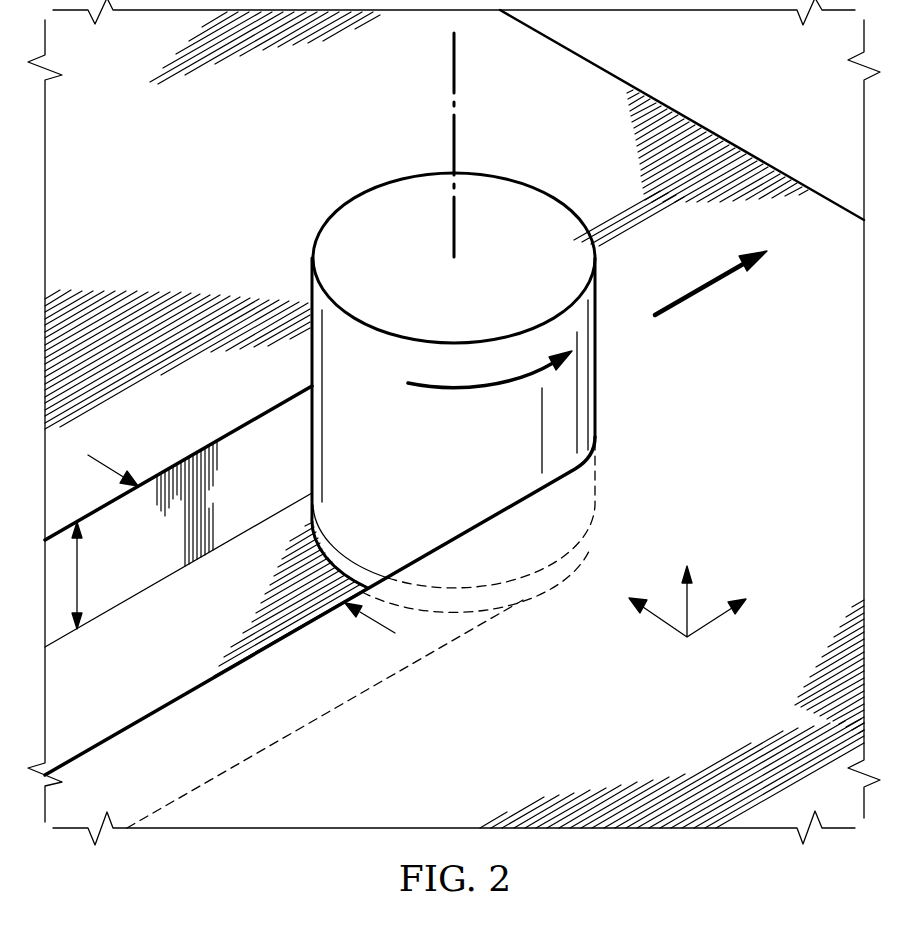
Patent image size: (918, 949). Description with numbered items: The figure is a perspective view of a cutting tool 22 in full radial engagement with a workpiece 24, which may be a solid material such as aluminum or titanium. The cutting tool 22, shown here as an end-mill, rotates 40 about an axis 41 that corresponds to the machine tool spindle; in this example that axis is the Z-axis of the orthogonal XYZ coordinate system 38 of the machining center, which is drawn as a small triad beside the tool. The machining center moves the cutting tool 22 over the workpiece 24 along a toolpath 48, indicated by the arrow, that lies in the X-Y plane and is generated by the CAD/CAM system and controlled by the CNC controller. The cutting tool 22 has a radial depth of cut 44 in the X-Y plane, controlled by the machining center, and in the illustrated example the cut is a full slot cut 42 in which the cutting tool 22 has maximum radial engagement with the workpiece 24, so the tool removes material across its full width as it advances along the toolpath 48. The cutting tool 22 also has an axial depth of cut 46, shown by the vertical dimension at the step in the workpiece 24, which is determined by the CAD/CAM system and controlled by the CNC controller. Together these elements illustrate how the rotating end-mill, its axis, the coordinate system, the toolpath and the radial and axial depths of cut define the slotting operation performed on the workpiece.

The cutting tool 22 is at (510, 188).
The workpiece 24 is at (607, 83).
The orthogonal XYZ coordinate system 38 is at (689, 650).
The rotation 40 is at (482, 389).
The axis 41 is at (454, 145).
The full slot cut 42 is at (240, 456).
The radial depth of cut 44 is at (112, 464).
The axial depth of cut 46 is at (79, 565).
The toolpath 48 is at (701, 286).